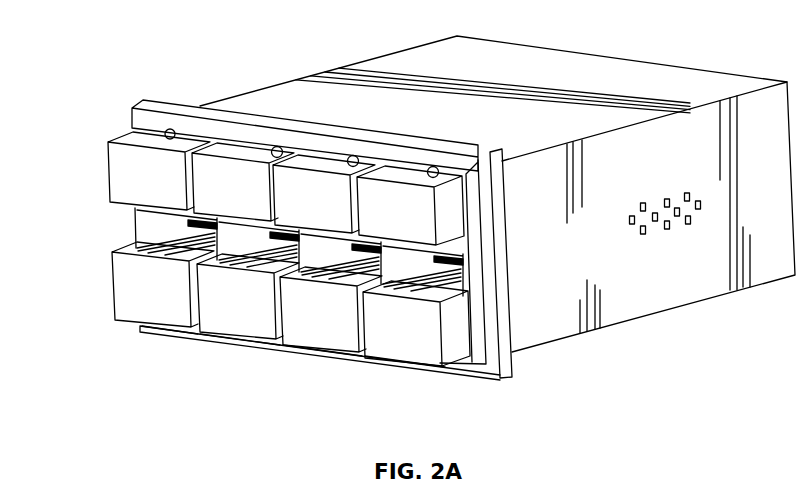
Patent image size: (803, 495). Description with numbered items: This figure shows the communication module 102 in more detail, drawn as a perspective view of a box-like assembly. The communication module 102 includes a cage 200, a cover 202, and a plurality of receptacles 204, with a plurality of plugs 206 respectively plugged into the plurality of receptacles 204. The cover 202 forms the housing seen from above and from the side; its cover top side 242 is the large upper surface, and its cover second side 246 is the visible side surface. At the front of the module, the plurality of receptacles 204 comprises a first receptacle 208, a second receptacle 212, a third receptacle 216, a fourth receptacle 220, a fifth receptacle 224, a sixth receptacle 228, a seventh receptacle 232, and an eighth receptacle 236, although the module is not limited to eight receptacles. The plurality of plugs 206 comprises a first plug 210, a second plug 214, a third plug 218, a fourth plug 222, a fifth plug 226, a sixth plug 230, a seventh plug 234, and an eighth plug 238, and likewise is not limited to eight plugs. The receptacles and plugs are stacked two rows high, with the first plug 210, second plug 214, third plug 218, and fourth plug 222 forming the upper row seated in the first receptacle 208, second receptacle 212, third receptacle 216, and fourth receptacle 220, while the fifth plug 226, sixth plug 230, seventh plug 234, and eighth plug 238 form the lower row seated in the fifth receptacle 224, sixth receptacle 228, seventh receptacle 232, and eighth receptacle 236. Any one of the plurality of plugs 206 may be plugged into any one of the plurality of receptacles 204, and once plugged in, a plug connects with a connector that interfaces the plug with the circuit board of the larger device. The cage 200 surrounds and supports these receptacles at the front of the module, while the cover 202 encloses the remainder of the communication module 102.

The communication module 102 is at (378, 48).
The cage 200 is at (460, 276).
The cover 202 is at (597, 75).
The plurality of receptacles 204 is at (106, 220).
The plurality of plugs 206 is at (106, 254).
The first receptacle 208 is at (172, 129).
The first plug 210 is at (129, 195).
The second receptacle 212 is at (281, 147).
The second plug 214 is at (209, 200).
The third receptacle 216 is at (354, 156).
The third plug 218 is at (294, 215).
The fourth receptacle 220 is at (435, 167).
The fourth plug 222 is at (378, 224).
The fifth receptacle 224 is at (152, 328).
The fifth plug 226 is at (130, 305).
The sixth receptacle 228 is at (233, 340).
The sixth plug 230 is at (214, 317).
The seventh receptacle 232 is at (320, 350).
The seventh plug 234 is at (297, 330).
The eighth receptacle 236 is at (407, 363).
The eighth plug 238 is at (383, 339).
The cover top side 242 is at (514, 135).
The cover second side 246 is at (636, 282).